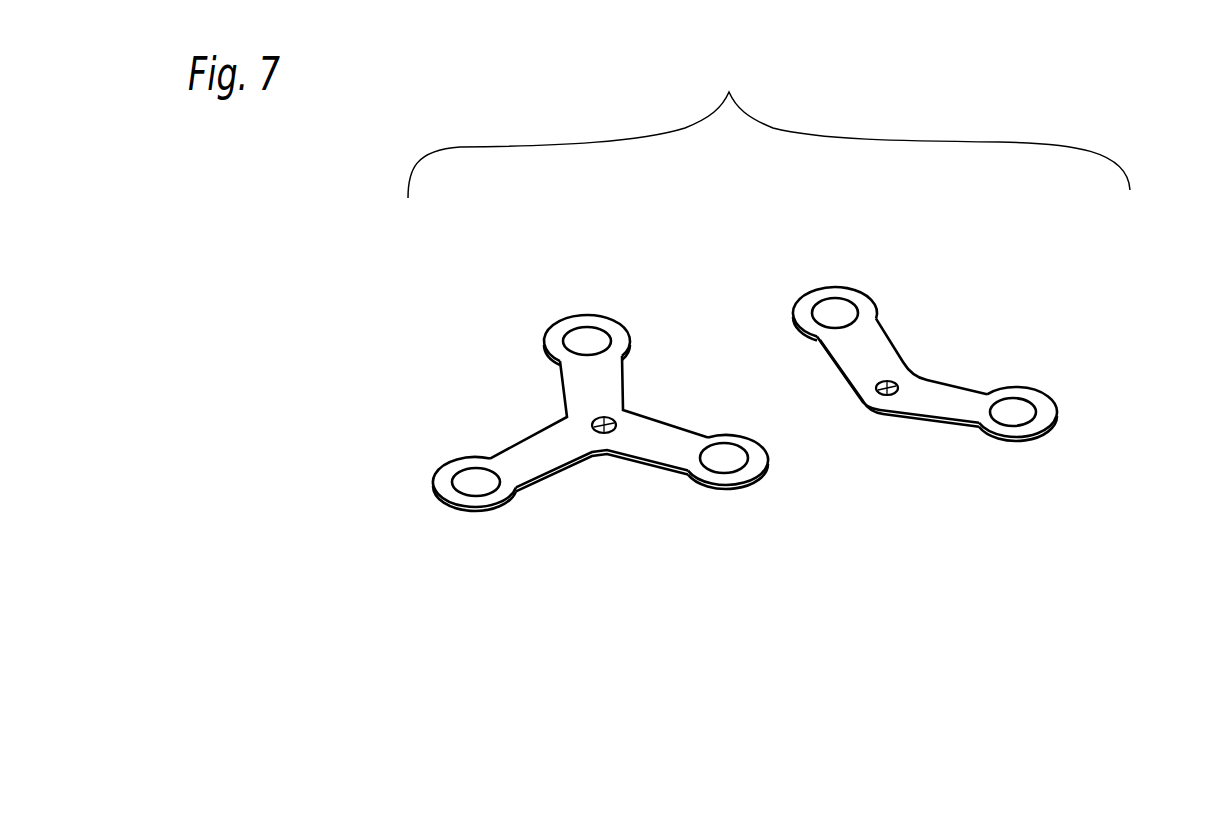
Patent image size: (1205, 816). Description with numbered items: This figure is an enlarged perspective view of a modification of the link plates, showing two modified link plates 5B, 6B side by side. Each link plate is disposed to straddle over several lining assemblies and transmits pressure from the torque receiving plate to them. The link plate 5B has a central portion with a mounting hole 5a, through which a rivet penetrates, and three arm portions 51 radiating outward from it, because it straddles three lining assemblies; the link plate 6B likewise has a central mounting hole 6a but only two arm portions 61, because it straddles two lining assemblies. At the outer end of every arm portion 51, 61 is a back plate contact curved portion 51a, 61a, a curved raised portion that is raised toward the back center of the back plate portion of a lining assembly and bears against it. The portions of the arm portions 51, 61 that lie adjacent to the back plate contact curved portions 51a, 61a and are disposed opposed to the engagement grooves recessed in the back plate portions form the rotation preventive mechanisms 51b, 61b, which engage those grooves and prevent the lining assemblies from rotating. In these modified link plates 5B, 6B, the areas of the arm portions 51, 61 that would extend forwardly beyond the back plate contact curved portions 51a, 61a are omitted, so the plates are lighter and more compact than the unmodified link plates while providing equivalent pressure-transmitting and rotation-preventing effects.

The link plate 5B is at (602, 417).
The arm portion 51 is at (563, 318).
The back plate contact curved portion 51a is at (587, 342).
The rotation preventive mechanism 51b is at (593, 380).
The mounting hole 5a is at (594, 423).
The link plate 6B is at (956, 357).
The arm portion 61 is at (830, 313).
The back plate contact curved portion 61a is at (827, 305).
The rotation preventive mechanism 61b is at (873, 357).
The mounting hole 6a is at (890, 386).